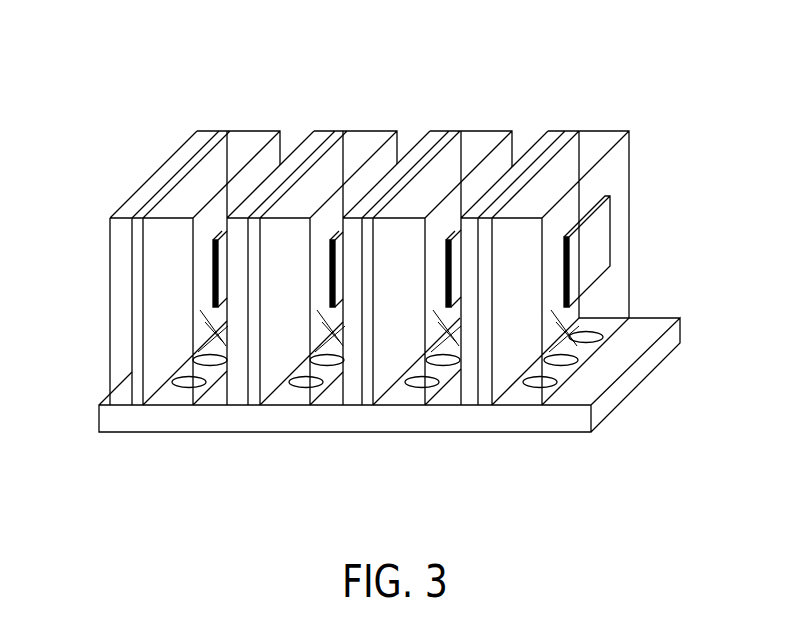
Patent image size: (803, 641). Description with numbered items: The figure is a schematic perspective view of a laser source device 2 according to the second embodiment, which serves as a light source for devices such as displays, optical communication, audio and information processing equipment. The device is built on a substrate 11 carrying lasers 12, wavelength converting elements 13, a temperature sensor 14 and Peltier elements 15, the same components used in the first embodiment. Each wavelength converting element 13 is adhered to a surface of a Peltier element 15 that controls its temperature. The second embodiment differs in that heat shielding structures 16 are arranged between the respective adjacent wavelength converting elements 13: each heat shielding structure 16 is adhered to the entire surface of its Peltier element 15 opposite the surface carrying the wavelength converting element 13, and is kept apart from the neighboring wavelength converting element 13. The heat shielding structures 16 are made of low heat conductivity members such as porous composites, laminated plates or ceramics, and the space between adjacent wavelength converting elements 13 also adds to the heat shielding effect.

The laser source device 2 is at (418, 98).
The substrate 11 is at (603, 405).
The lasers 12 is at (174, 387).
The wavelength converting elements 13 is at (197, 192).
The temperature sensor 14 is at (224, 241).
The Peltier elements 15 is at (135, 303).
The heat shielding structures 16 is at (203, 131).